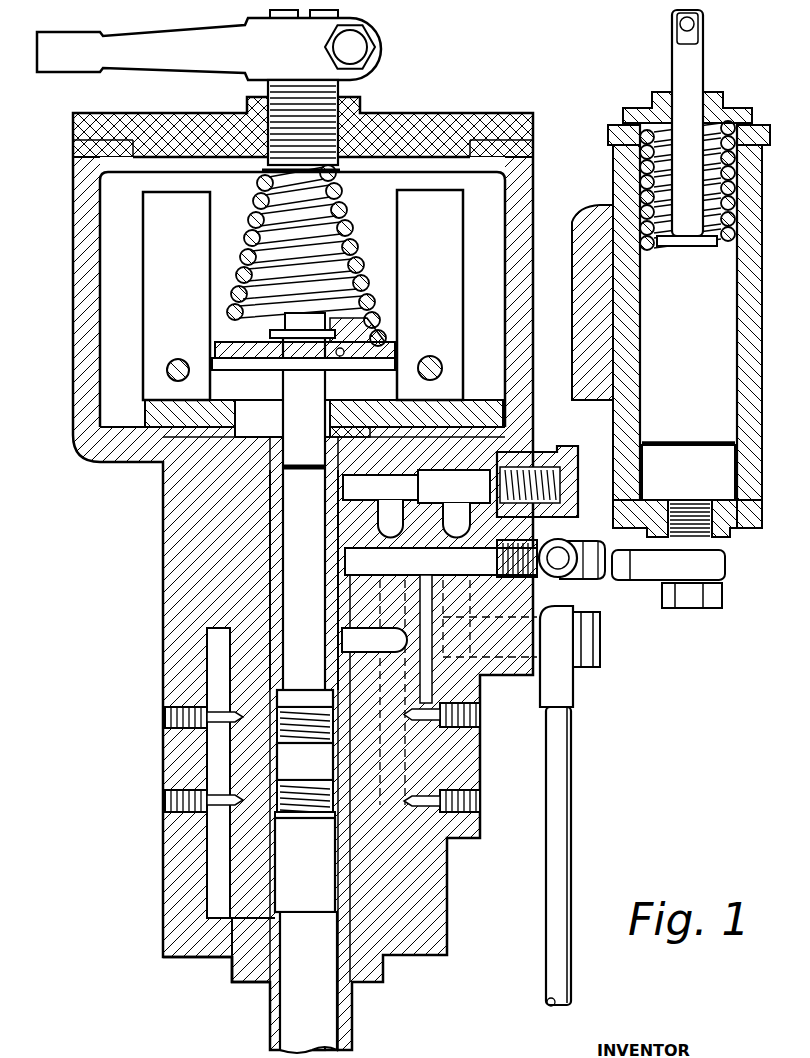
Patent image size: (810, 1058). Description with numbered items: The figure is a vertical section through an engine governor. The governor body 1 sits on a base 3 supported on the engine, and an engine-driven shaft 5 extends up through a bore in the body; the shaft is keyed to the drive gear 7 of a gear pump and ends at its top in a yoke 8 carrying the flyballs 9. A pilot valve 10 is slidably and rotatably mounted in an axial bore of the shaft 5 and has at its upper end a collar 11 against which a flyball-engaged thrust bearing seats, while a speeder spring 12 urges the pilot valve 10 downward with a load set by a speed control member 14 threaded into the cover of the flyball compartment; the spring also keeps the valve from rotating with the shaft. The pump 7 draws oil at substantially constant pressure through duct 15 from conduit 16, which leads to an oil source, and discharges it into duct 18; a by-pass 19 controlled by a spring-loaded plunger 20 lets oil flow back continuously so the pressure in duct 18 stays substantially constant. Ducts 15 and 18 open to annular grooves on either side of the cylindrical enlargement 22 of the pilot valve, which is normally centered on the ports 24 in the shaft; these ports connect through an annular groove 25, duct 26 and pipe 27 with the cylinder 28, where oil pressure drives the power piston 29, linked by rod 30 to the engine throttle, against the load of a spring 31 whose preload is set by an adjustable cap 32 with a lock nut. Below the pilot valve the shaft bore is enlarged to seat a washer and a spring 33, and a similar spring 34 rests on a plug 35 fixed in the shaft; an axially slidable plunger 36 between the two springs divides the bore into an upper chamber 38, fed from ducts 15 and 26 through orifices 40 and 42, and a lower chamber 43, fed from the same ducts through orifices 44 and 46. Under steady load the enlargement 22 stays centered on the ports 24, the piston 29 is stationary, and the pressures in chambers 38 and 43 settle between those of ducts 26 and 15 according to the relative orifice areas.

The governor body 1 is at (182, 541).
The base 3 is at (218, 947).
The shaft 5 is at (272, 1018).
The drive gear 7 is at (218, 898).
The yoke 8 is at (153, 417).
The flyballs 9 is at (157, 215).
The pilot valve 10 is at (297, 442).
The collar 11 is at (268, 313).
The speeder spring 12 is at (243, 258).
The speed control member 14 is at (358, 82).
The duct 15 is at (217, 642).
The conduit 16 is at (558, 848).
The duct 18 is at (392, 512).
The by-pass 19 is at (453, 518).
The spring-loaded plunger 20 is at (472, 518).
The cylindrical enlargement 22 is at (300, 560).
The ports 24 is at (292, 527).
The annular groove 25 is at (292, 572).
The duct 26 is at (540, 655).
The pipe 27 is at (585, 560).
The cylinder 28 is at (722, 468).
The power piston 29 is at (710, 363).
The rod 30 is at (697, 50).
The spring 31 is at (647, 127).
The adjustable cap 32 is at (717, 92).
The spring 33 is at (320, 693).
The spring 34 is at (335, 815).
The plug 35 is at (290, 852).
The plunger 36 is at (300, 757).
The upper chamber 38 is at (400, 692).
The orifice 40 is at (240, 705).
The orifice 42 is at (403, 717).
The lower chamber 43 is at (337, 817).
The orifice 44 is at (247, 803).
The orifice 46 is at (412, 793).